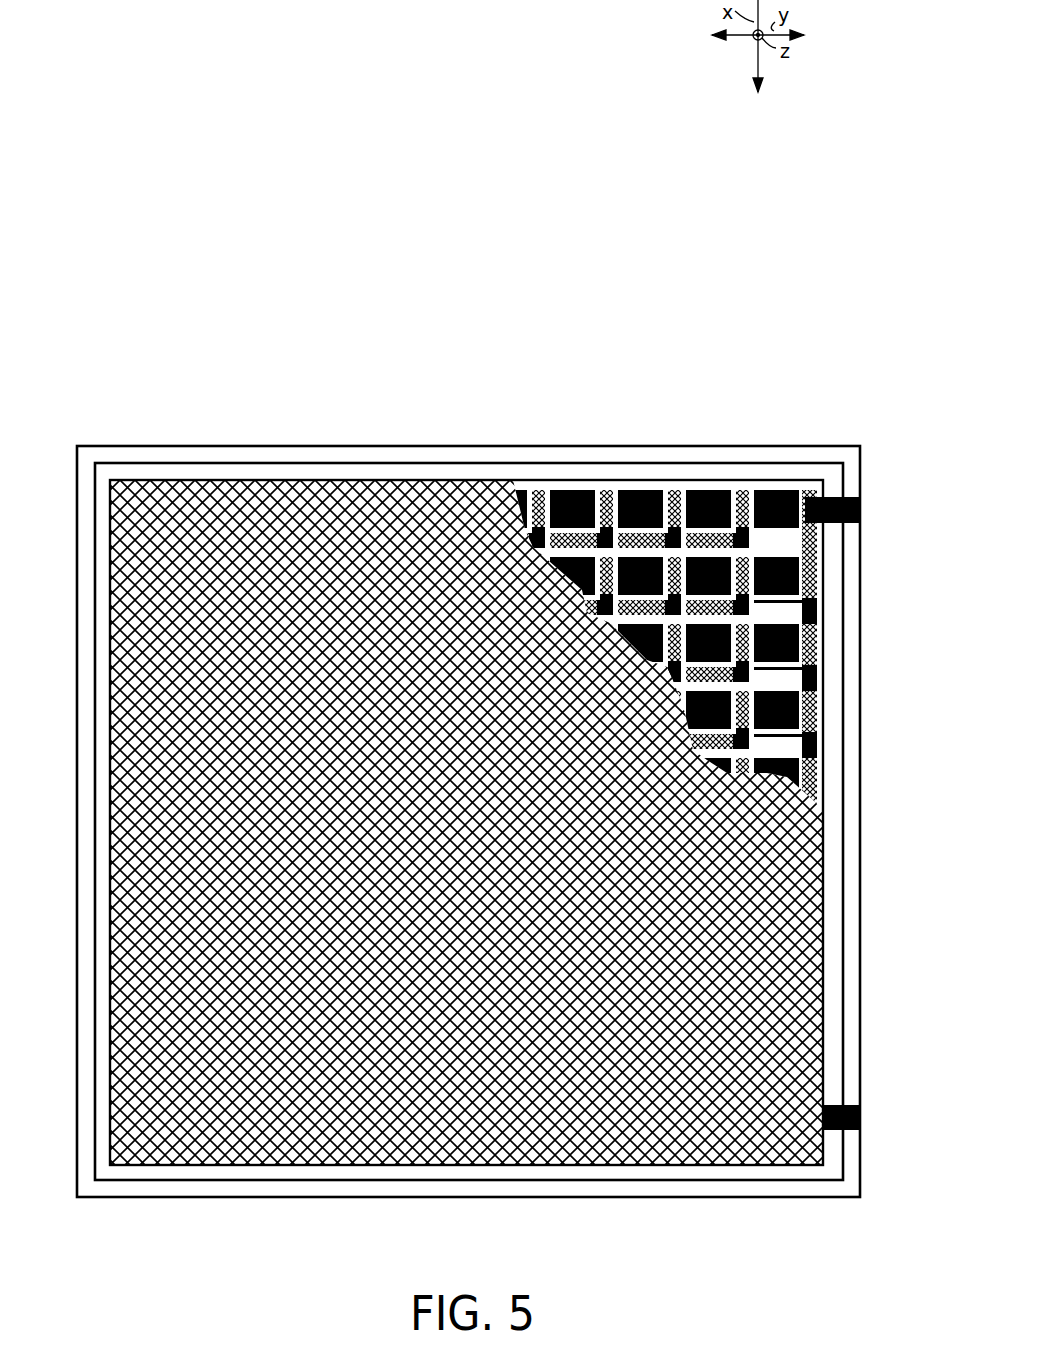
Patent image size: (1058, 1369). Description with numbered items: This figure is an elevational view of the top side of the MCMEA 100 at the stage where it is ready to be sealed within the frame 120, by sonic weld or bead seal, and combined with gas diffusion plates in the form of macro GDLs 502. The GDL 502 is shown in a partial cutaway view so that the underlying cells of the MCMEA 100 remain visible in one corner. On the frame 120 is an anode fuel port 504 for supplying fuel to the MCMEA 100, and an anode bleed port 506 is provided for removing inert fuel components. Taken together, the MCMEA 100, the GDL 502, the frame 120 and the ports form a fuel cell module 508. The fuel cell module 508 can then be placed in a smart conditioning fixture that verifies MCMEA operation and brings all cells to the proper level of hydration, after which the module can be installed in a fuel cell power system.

The MCMEA 100 is at (185, 132).
The frame 120 is at (252, 1196).
The macro GDL 502 is at (258, 485).
The anode fuel port 504 is at (860, 565).
The anode bleed port 506 is at (860, 1087).
The fuel cell module 508 is at (748, 440).